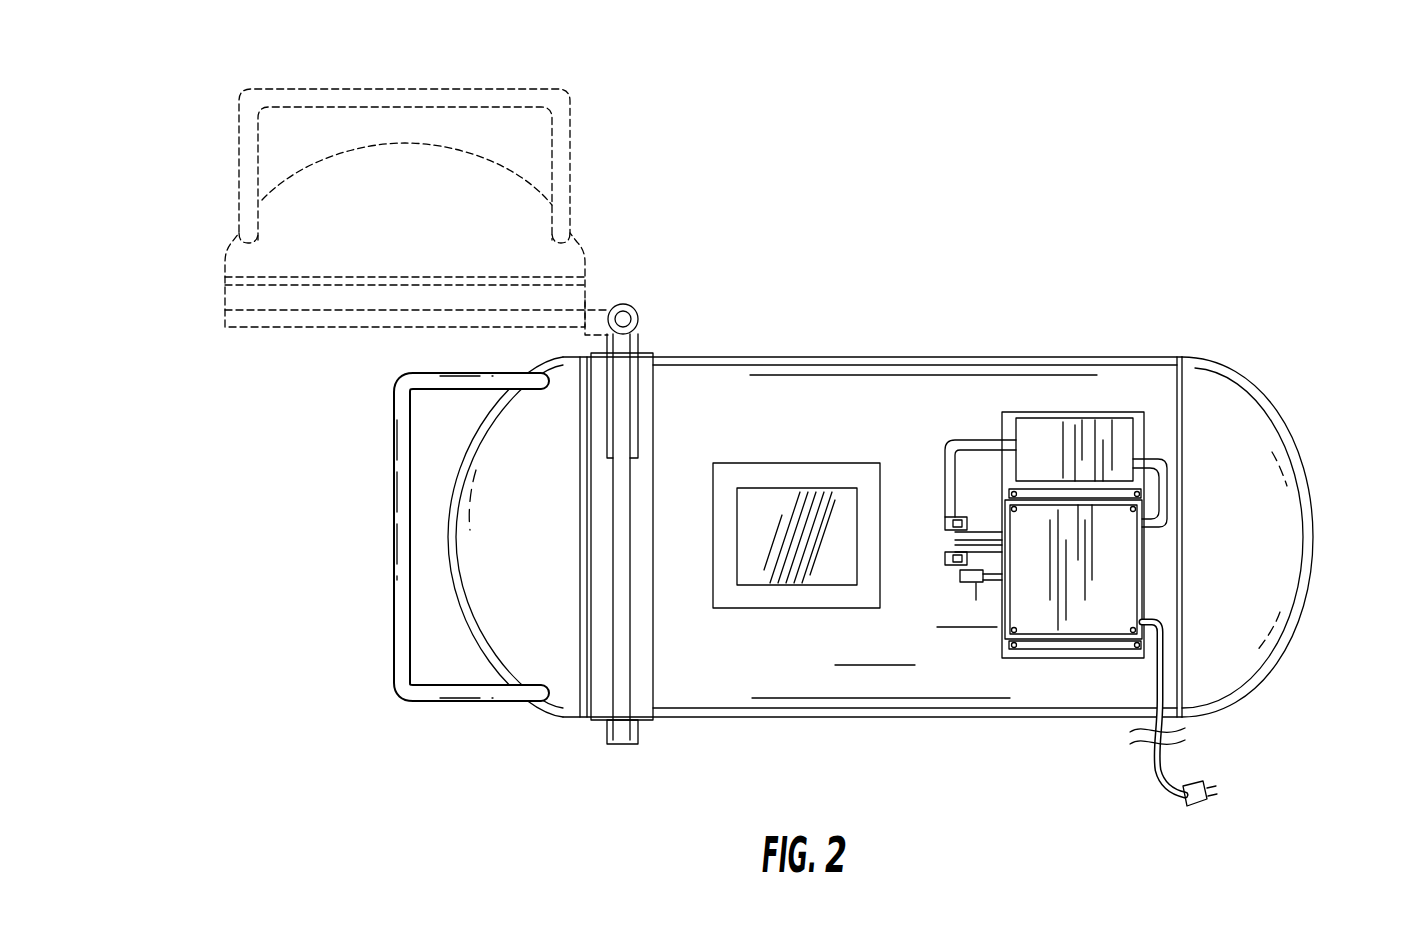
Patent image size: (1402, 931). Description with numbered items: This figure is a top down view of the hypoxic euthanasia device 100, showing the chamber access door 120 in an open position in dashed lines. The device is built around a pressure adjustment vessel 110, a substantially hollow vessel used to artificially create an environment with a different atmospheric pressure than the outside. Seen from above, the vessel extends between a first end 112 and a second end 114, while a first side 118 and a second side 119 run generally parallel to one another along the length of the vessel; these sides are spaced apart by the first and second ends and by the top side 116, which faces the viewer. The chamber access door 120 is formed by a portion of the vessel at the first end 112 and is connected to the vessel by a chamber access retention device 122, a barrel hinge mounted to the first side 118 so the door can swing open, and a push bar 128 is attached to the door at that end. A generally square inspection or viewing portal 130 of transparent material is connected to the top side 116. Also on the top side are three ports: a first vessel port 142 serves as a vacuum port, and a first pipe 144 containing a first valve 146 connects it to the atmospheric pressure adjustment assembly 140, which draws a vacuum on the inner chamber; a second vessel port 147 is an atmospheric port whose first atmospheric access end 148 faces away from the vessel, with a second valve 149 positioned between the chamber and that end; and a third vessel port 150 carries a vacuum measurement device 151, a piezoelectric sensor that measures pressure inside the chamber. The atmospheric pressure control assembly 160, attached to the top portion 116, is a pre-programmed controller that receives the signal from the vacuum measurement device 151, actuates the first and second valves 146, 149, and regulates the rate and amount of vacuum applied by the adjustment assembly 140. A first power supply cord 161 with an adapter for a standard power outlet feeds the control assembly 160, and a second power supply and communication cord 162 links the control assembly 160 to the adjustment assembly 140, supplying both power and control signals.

The hypoxic euthanasia device 100 is at (1062, 221).
The pressure adjustment vessel 110 is at (727, 393).
The first end 112 is at (290, 178).
The second end 114 is at (1308, 492).
The top side 116 is at (820, 395).
The first side 118 is at (947, 355).
The second side 119 is at (862, 717).
The chamber access door 120 is at (378, 175).
The chamber access retention device 122 is at (632, 308).
The push bar 128 is at (501, 97).
The inspection or viewing portal 130 is at (758, 575).
The atmospheric pressure adjustment assembly 140 is at (1115, 425).
The first vessel port 142 is at (945, 523).
The first pipe 144 is at (982, 445).
The first valve 146 is at (955, 515).
The second vessel port 147 is at (948, 562).
The first atmospheric access end 148 is at (948, 555).
The second valve 149 is at (960, 578).
The third vessel port 150 is at (968, 583).
The vacuum measurement device 151 is at (976, 600).
The atmospheric pressure control assembly 160 is at (1125, 578).
The first power supply cord 161 is at (1176, 762).
The second power supply and communication cord 162 is at (1160, 465).